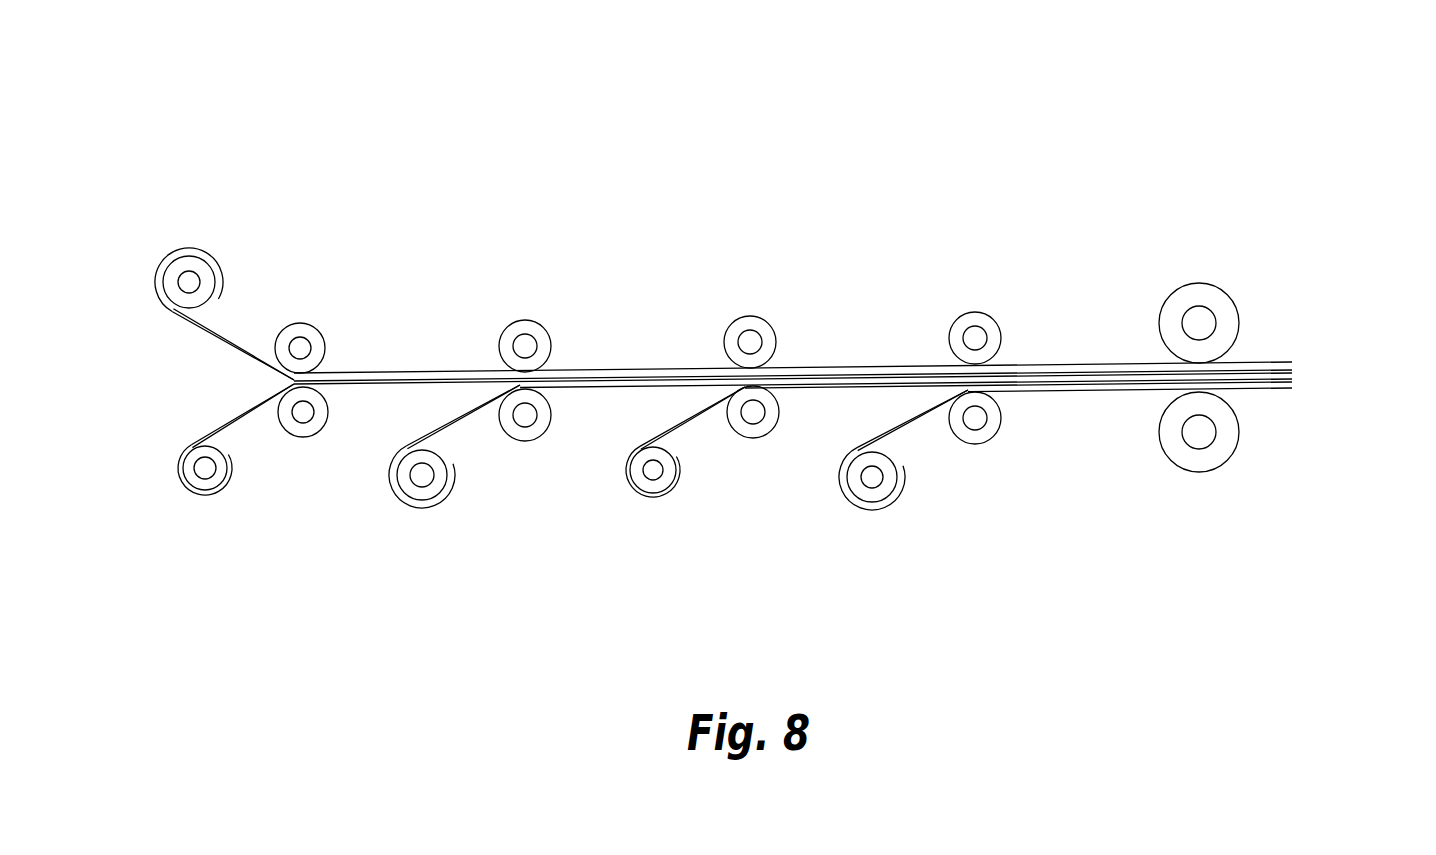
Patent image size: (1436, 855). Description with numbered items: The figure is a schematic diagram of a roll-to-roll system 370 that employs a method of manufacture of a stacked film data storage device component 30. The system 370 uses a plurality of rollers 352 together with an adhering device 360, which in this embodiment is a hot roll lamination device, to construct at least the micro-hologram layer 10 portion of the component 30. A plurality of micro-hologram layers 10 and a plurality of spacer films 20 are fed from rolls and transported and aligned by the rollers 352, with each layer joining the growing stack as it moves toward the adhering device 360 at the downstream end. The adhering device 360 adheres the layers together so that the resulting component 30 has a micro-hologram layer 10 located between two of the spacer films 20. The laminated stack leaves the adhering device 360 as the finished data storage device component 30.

The micro-hologram layer 10 is at (240, 422).
The spacer film 20 is at (207, 332).
The data storage device component 30 is at (1303, 406).
The rollers 352 is at (180, 268).
The adhering device 360 is at (1270, 283).
The roll-to-roll system 370 is at (1122, 120).